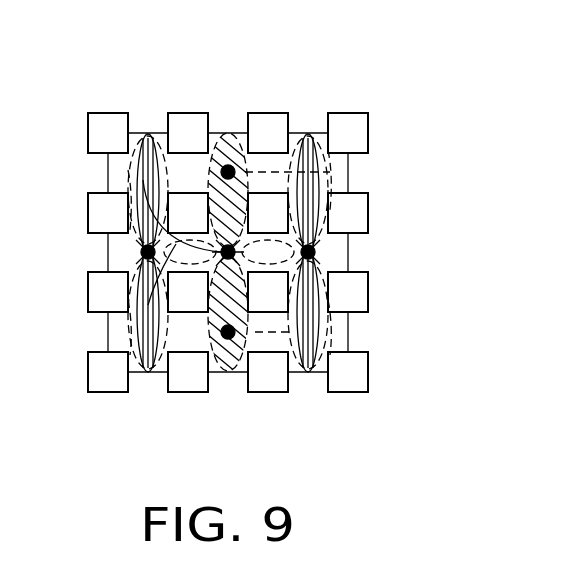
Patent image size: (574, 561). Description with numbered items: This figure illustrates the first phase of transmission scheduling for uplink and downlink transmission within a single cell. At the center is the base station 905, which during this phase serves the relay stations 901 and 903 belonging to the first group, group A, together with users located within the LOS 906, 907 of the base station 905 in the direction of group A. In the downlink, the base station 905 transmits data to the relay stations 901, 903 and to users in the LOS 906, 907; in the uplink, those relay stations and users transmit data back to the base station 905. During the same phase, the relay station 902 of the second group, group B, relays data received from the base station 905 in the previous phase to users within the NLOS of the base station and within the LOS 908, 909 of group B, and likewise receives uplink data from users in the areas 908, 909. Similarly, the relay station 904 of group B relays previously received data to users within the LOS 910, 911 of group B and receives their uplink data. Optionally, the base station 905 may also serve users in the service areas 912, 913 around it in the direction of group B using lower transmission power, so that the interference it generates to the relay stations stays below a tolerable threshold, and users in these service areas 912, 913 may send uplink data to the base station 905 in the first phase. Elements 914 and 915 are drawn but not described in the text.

The relay station 901 is at (229, 166).
The relay station 902 is at (316, 252).
The relay station 903 is at (226, 342).
The relay station 904 is at (141, 252).
The base station 905 is at (148, 136).
The LOS of the base station 906 is at (245, 172).
The LOS of the base station 907 is at (255, 332).
The LOS of group B 908 is at (330, 172).
The LOS of group B 909 is at (300, 330).
The LOS of group B 910 is at (130, 178).
The LOS of group B 911 is at (130, 326).
The service area 912 is at (247, 374).
The service area 913 is at (147, 374).
The unit cell 914 is at (107, 114).
The striped electrode 915 is at (306, 134).